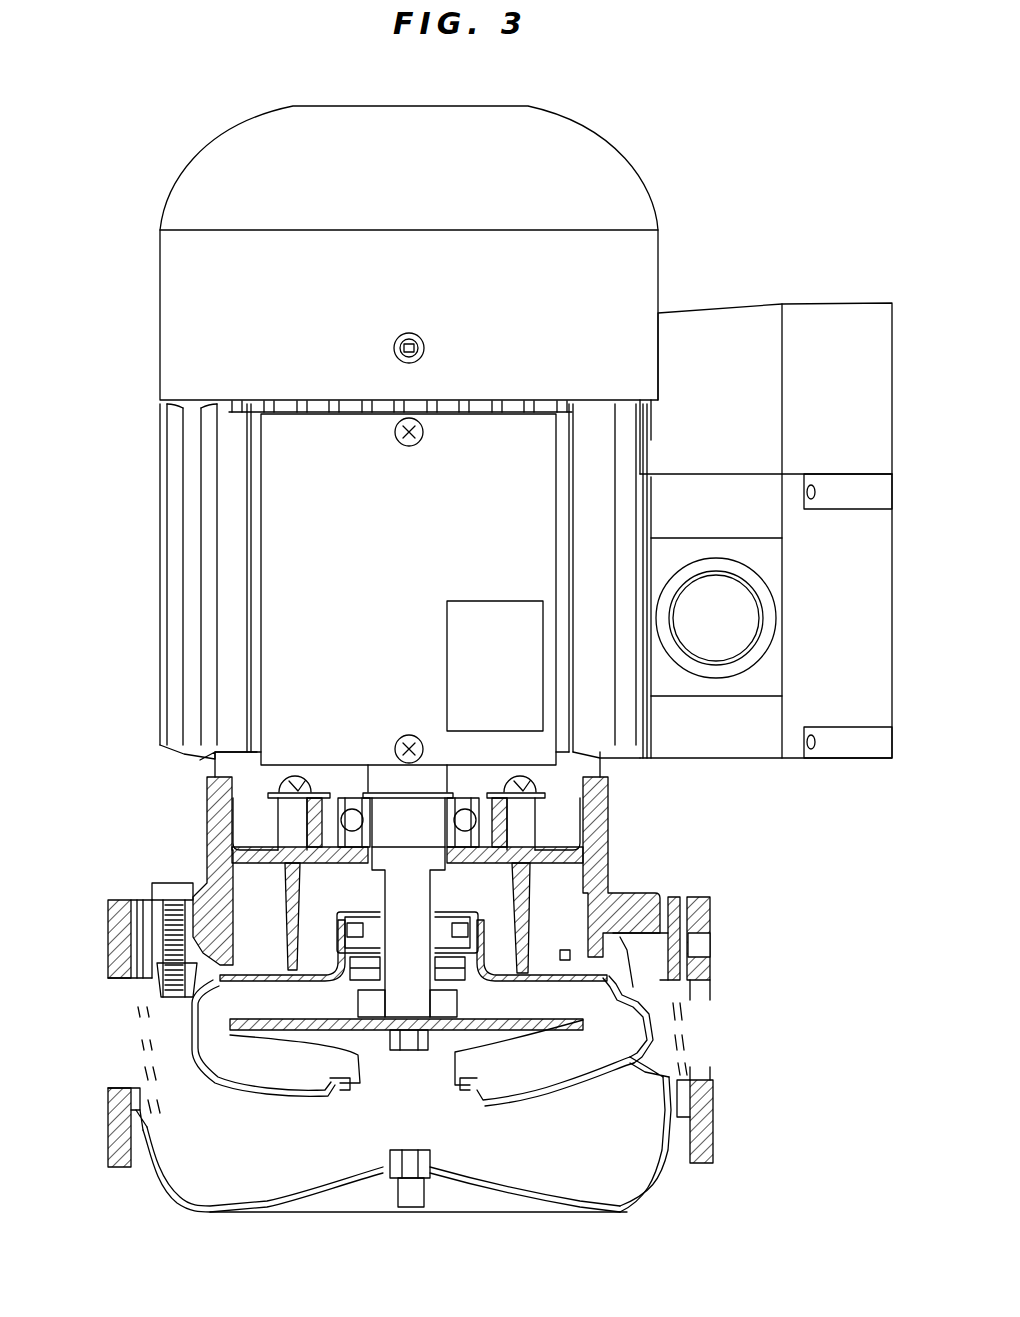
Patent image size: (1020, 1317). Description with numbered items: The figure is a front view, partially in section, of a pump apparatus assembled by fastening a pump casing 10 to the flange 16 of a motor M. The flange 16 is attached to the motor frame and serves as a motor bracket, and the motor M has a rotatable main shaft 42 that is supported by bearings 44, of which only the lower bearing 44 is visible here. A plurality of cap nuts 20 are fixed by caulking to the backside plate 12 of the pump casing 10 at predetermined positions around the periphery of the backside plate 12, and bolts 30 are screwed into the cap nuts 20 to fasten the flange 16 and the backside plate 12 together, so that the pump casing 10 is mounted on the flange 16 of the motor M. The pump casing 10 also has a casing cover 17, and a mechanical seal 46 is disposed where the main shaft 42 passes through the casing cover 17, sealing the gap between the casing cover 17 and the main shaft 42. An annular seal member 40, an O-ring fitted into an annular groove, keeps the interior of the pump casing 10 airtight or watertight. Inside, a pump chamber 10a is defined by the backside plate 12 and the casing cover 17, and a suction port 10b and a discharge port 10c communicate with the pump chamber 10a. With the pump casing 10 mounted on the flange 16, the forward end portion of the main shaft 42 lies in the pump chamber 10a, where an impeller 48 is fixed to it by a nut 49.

The motor M is at (124, 478).
The pump casing 10 is at (642, 1208).
The pump chamber 10a is at (282, 1067).
The suction port 10b is at (128, 1058).
The discharge port 10c is at (697, 1040).
The backside plate 12 is at (603, 968).
The flange 16 is at (600, 877).
The casing cover 17 is at (563, 955).
The cap nut 20 is at (157, 973).
The bolt 30 is at (187, 925).
The annular seal member 40 is at (168, 957).
The main shaft 42 is at (413, 907).
The bearing 44 is at (330, 812).
The mechanical seal 46 is at (330, 923).
The impeller 48 is at (557, 1033).
The nut 49 is at (407, 1040).